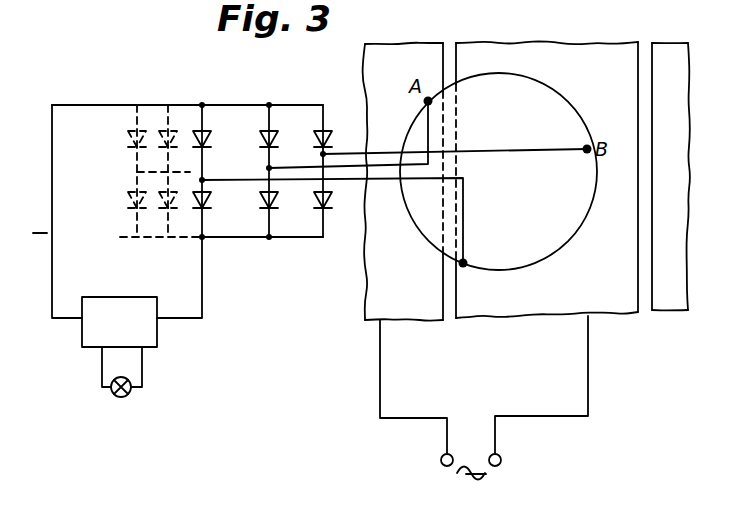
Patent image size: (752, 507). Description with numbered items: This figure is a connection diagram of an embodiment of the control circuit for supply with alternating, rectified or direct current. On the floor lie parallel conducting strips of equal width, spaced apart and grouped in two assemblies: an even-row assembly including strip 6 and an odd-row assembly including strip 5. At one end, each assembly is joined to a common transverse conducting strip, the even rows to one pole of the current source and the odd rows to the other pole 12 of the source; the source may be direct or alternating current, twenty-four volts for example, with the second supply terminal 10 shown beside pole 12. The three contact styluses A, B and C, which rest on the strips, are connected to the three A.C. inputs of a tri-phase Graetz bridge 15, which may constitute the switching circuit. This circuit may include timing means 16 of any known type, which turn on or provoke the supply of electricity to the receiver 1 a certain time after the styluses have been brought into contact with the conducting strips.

The receiver 1 is at (111, 398).
The conducting strip of odd row 5 is at (378, 293).
The conducting strip of even row 6 is at (617, 302).
The supply terminal 10 is at (501, 460).
The pole of the source of electrical current 12 is at (441, 460).
The tri-phase Graetz bridge 15 is at (250, 156).
The timing means 16 is at (120, 296).